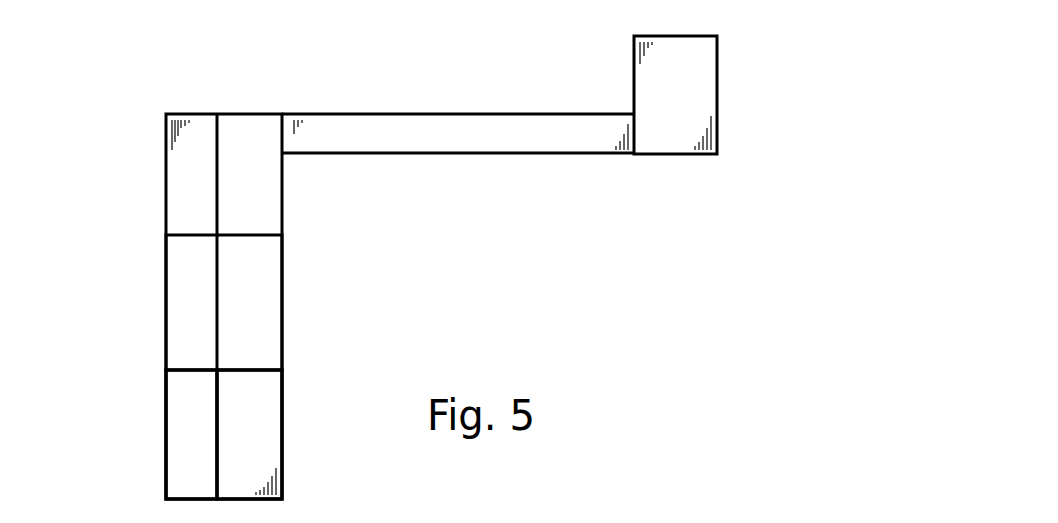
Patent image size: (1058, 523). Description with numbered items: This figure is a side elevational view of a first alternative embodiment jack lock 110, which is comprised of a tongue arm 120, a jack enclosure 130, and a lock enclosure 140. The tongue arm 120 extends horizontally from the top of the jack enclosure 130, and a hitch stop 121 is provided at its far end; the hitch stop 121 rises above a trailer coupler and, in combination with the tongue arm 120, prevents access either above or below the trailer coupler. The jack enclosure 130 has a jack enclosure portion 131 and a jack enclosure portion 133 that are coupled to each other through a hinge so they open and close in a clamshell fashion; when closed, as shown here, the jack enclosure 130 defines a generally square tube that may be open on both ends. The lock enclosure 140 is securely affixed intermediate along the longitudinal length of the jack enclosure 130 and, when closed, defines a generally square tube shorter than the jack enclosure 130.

The jack lock 110 is at (157, 133).
The tongue arm 120 is at (541, 155).
The hitch stop 121 is at (642, 78).
The jack enclosure 130 is at (167, 438).
The jack enclosure portion 131 is at (183, 412).
The jack enclosure portion 133 is at (263, 451).
The lock enclosure 140 is at (161, 306).